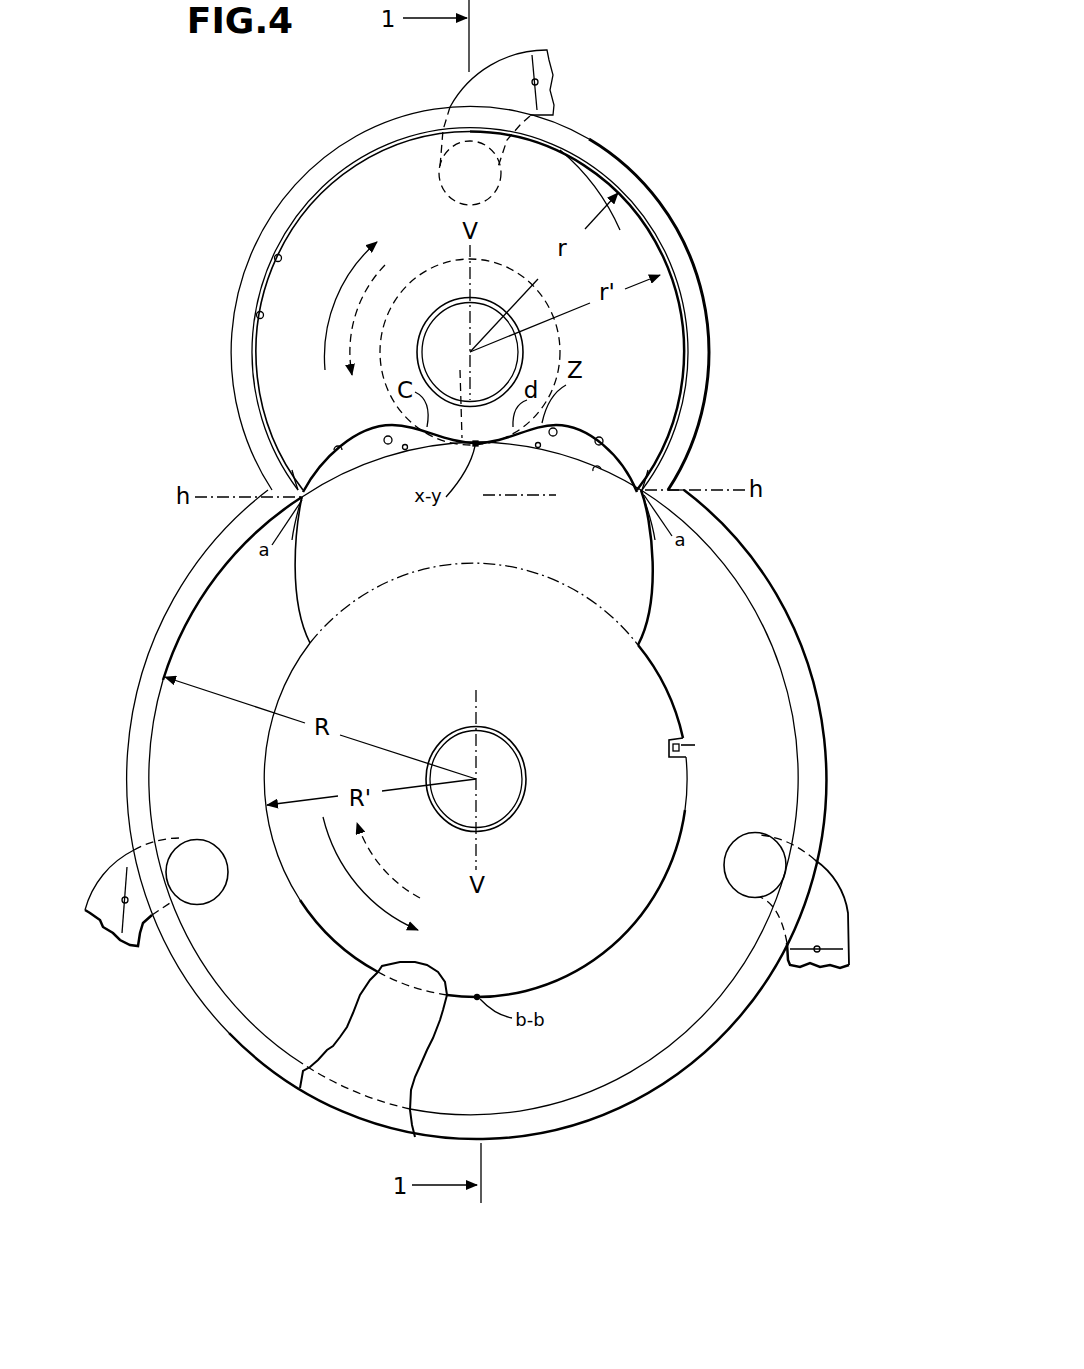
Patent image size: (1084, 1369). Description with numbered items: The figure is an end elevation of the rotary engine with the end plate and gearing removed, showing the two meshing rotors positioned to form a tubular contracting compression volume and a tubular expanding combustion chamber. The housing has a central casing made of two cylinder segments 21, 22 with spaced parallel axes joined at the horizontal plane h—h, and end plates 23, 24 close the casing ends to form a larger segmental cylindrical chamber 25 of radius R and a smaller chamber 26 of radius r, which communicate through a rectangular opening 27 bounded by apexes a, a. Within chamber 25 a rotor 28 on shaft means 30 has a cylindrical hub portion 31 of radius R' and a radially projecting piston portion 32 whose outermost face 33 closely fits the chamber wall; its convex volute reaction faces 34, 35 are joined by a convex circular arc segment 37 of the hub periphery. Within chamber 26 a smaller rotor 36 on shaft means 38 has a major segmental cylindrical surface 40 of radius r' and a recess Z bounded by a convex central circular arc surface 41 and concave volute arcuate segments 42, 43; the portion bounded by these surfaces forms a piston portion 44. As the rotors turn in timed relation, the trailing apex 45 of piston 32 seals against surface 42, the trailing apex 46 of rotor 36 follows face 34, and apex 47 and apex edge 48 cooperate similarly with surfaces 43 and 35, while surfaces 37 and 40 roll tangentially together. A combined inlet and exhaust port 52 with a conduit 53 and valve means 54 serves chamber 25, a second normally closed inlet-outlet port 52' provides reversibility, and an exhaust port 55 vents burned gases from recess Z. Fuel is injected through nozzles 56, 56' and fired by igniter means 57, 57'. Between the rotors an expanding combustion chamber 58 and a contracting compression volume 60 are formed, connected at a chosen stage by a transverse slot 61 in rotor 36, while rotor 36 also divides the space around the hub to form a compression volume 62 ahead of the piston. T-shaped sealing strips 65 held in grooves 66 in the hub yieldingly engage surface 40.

The cylinder segment 21 is at (185, 593).
The cylinder segment 22 is at (238, 368).
The end plate 23 is at (607, 1072).
The end plate 24 is at (417, 1048).
The segmental cylindrical chamber 25 is at (172, 782).
The segmental cylindrical chamber 26 is at (275, 256).
The rectangular opening 27 is at (500, 496).
The rotor 28 is at (687, 778).
The shaft means 30 is at (523, 790).
The cylindrical hub portion 31 is at (612, 935).
The piston portion 32 is at (642, 608).
The outermost face 33 is at (597, 472).
The reaction face 34 is at (290, 587).
The reaction face 35 is at (656, 588).
The rotor 36 is at (565, 175).
The convex circular arc segment 37 is at (315, 923).
The shaft means 38 is at (443, 332).
The segmental cylindrical surface 40 is at (262, 311).
The convex central circular arc surface 41 is at (428, 436).
The concave volute arcuate segment 42 is at (334, 449).
The concave volute arcuate segment 43 is at (603, 437).
The piston portion 44 is at (345, 197).
The trailing apex 45 is at (312, 522).
The trailing apex 46 is at (300, 482).
The trailing apex 47 is at (637, 524).
The trailing apex edge 48 is at (660, 463).
The combined inlet and exhaust port 52 is at (218, 878).
The inlet-outlet port 52' is at (736, 878).
The conduit 53 is at (140, 947).
The valve means 54 is at (113, 920).
The exhaust port 55 is at (440, 172).
The nozzle 56 is at (390, 472).
The nozzle 56' is at (517, 466).
The igniter means 57 is at (369, 417).
The igniter means 57' is at (578, 413).
The combustion chamber 58 is at (352, 460).
The compression volume 60 is at (578, 455).
The transverse slot 61 is at (447, 395).
The compression volume 62 is at (790, 724).
The sealing strip 65 is at (685, 745).
The groove 66 is at (668, 745).